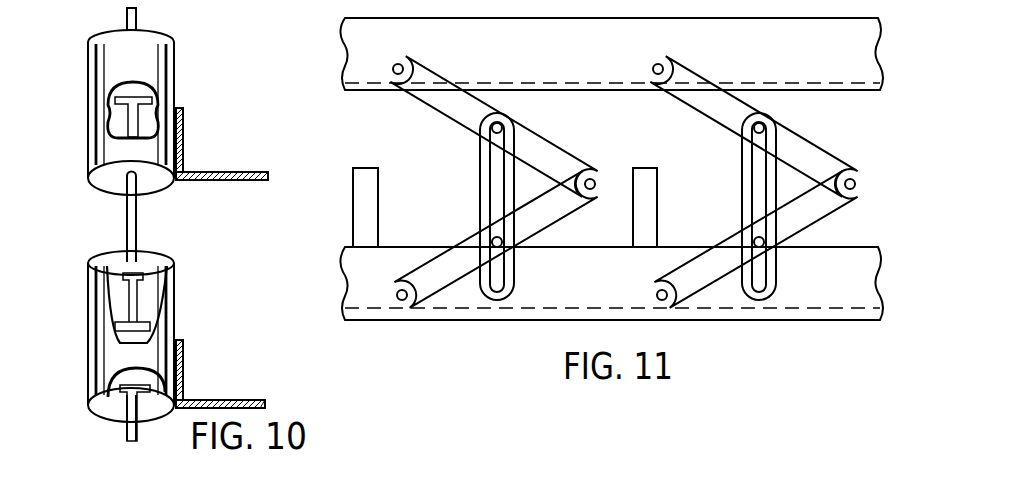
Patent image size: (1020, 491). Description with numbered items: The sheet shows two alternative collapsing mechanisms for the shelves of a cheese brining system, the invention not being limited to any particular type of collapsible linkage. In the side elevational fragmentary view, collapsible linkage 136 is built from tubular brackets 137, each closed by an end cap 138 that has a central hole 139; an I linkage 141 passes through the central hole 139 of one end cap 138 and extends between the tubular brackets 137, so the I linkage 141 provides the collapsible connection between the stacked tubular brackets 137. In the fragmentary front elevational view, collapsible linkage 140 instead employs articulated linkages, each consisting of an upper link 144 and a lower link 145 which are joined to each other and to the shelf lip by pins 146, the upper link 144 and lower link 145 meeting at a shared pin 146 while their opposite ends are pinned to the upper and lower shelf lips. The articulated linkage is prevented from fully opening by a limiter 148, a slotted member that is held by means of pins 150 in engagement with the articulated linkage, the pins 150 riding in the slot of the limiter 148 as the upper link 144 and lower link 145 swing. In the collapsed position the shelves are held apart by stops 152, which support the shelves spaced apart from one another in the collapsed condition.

In FIG. 10, the collapsible linkage 136 is at (76, 68).
In FIG. 10, the tubular bracket 137 is at (88, 130).
In FIG. 10, the end cap 138 is at (157, 192).
In FIG. 10, the central hole 139 is at (125, 183).
In FIG. 10, the I linkage 141 is at (126, 228).
In FIG. 11, the collapsible linkage 140 is at (344, 122).
In FIG. 11, the upper link 144 is at (430, 100).
In FIG. 11, the lower link 145 is at (466, 240).
In FIG. 11, the pin 146 is at (410, 67).
In FIG. 11, the limiter 148 is at (479, 153).
In FIG. 11, the pin 150 is at (506, 118).
In FIG. 11, the stop 152 is at (350, 188).